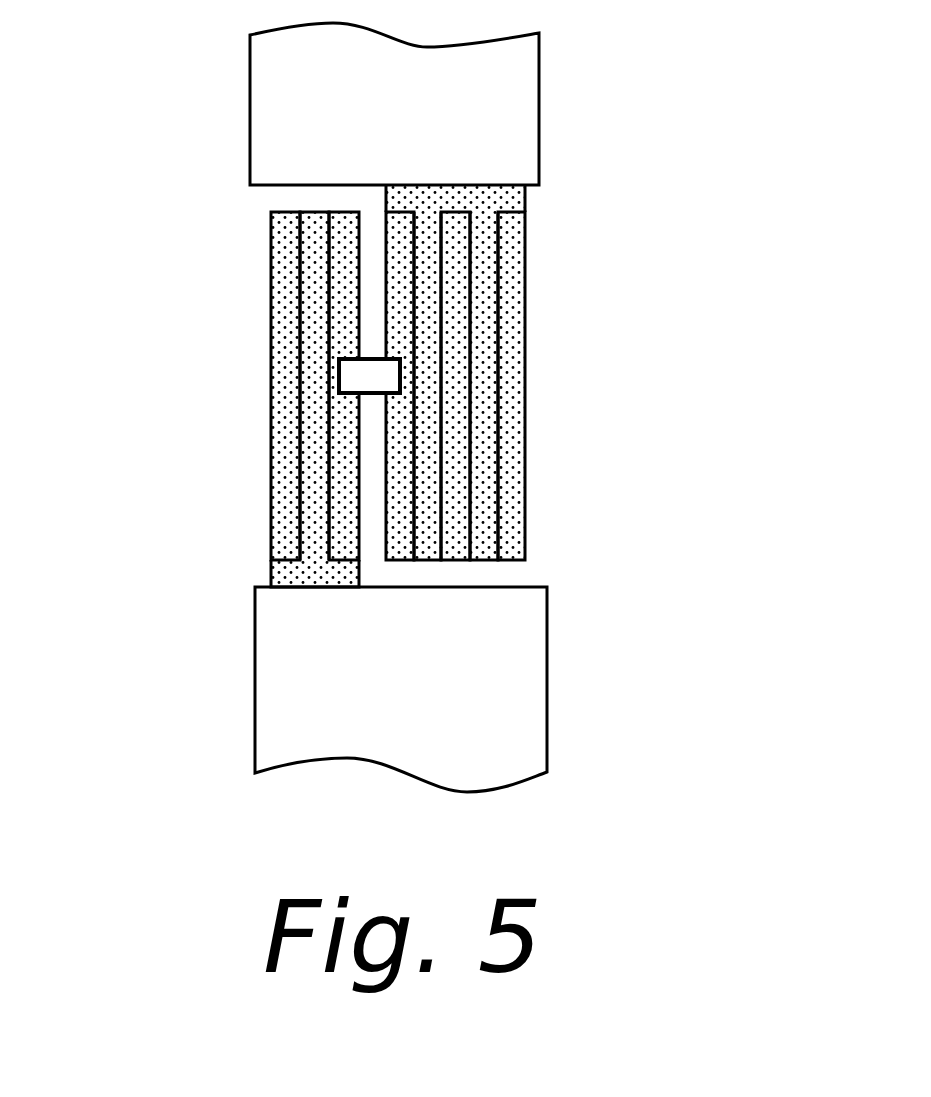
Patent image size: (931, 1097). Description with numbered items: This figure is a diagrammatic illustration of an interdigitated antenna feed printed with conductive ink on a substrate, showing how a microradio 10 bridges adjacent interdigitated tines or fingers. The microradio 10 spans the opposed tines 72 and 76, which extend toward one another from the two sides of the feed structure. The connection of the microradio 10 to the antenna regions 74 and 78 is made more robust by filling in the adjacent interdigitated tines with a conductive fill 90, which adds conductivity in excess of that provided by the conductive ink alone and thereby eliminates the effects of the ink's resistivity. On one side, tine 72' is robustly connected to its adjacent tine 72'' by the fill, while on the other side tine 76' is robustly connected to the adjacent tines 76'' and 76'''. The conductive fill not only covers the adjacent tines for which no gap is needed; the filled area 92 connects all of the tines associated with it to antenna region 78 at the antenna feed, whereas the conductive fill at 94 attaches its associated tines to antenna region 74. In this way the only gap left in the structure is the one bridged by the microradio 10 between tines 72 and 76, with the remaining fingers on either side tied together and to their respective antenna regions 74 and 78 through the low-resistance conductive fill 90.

The microradio 10 is at (368, 380).
The tine 72 is at (266, 330).
The tine 72' is at (231, 386).
The tine 72'' is at (199, 371).
The antenna region 74 is at (425, 141).
The tine 76 is at (506, 330).
The tine 76' is at (531, 386).
The tine 76'' is at (559, 386).
The tine 76''' is at (591, 386).
The antenna region 78 is at (430, 699).
The conductive fill 90 is at (490, 523).
The area 92 is at (300, 570).
The conductive fill 94 is at (522, 188).